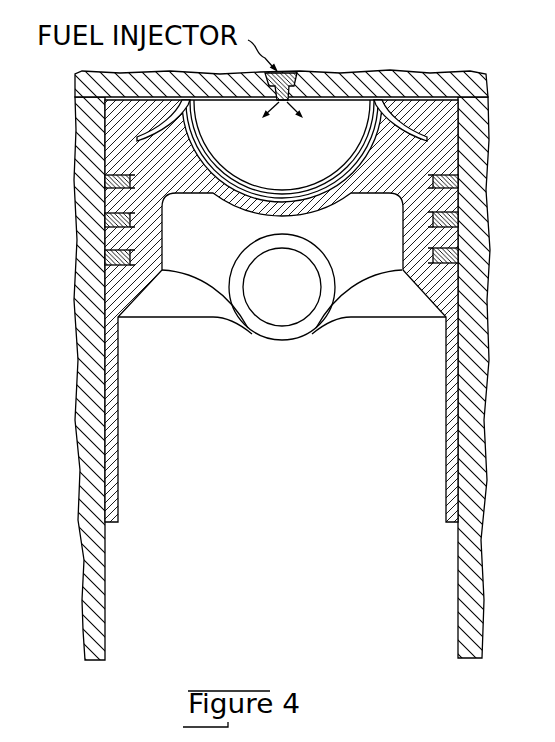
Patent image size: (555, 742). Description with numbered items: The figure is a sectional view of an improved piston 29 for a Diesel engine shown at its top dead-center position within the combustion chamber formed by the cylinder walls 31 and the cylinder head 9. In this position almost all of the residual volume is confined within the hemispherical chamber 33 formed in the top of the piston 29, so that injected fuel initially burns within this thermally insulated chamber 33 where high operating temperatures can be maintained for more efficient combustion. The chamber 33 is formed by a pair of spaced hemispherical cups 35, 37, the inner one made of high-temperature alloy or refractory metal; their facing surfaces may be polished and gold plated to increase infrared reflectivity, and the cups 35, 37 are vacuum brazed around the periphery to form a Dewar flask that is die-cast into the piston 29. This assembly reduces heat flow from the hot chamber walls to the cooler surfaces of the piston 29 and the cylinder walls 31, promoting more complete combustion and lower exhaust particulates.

The cylinder head 9 is at (375, 71).
The piston 29 is at (381, 247).
The cylinder walls 31 is at (490, 312).
The hemispherical chamber 33 is at (284, 171).
The cup 35 is at (350, 158).
The cup 37 is at (197, 137).